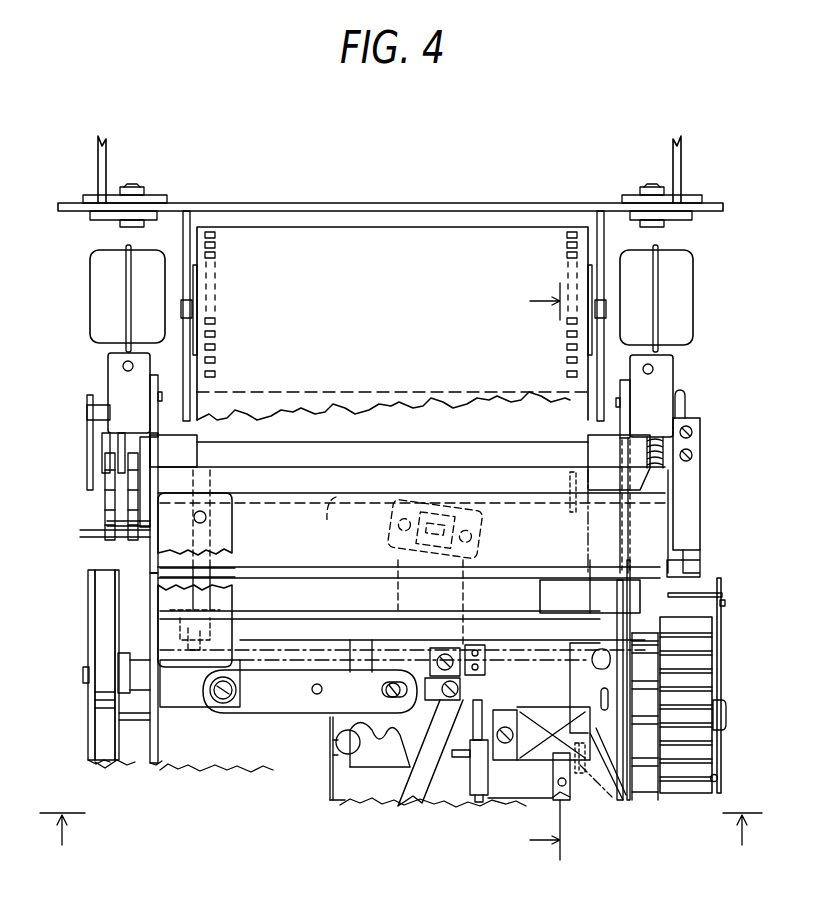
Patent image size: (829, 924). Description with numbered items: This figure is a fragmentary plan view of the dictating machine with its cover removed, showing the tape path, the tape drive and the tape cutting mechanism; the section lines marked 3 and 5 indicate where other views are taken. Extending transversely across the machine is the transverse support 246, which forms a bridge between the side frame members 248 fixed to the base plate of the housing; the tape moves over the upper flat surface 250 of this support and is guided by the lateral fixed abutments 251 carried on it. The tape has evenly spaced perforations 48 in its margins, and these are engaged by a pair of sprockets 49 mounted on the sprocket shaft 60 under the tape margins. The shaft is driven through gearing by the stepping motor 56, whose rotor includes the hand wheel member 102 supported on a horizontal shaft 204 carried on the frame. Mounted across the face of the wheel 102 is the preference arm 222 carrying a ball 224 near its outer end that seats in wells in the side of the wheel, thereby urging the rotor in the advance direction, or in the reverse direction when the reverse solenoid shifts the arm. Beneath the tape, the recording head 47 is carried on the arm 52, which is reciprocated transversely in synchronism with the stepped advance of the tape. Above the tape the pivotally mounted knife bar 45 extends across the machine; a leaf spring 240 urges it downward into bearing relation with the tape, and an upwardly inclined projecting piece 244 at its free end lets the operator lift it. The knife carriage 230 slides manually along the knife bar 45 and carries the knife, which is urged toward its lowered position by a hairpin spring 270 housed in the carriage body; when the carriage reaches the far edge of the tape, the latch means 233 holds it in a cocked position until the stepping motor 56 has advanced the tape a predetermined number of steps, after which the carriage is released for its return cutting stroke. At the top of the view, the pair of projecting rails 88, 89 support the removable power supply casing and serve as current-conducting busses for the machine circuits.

The section line 3- 3 is at (401, 846).
The section line 5- 5 is at (541, 571).
The knife bar 45 is at (367, 575).
The recording head 47 is at (478, 535).
The perforations 48 is at (216, 361).
The sprockets 49 is at (568, 488).
The arm 52 is at (416, 812).
The stepping motor 56 is at (648, 814).
The sprocket shaft 60 is at (341, 523).
The projecting rail 88 is at (107, 174).
The projecting rail 89 is at (673, 173).
The hand wheel member 102 is at (700, 697).
The horizontal shaft 204 is at (726, 716).
The preference arm 222 is at (721, 656).
The ball 224 is at (718, 778).
The knife carriage 230 is at (228, 527).
The latch means 233 is at (594, 648).
The leaf spring 240 is at (150, 565).
The projecting piece 244 is at (652, 521).
The transverse support 246 is at (462, 458).
The side frame members 248 is at (152, 762).
The upper flat surface 250 is at (346, 471).
The lateral fixed abutments 251 is at (197, 455).
The hairpin spring 270 is at (228, 556).